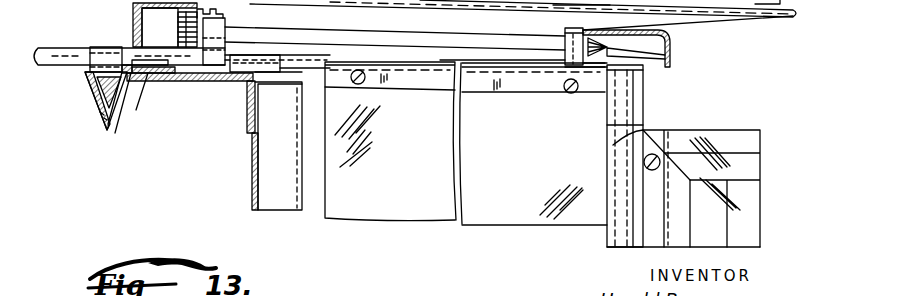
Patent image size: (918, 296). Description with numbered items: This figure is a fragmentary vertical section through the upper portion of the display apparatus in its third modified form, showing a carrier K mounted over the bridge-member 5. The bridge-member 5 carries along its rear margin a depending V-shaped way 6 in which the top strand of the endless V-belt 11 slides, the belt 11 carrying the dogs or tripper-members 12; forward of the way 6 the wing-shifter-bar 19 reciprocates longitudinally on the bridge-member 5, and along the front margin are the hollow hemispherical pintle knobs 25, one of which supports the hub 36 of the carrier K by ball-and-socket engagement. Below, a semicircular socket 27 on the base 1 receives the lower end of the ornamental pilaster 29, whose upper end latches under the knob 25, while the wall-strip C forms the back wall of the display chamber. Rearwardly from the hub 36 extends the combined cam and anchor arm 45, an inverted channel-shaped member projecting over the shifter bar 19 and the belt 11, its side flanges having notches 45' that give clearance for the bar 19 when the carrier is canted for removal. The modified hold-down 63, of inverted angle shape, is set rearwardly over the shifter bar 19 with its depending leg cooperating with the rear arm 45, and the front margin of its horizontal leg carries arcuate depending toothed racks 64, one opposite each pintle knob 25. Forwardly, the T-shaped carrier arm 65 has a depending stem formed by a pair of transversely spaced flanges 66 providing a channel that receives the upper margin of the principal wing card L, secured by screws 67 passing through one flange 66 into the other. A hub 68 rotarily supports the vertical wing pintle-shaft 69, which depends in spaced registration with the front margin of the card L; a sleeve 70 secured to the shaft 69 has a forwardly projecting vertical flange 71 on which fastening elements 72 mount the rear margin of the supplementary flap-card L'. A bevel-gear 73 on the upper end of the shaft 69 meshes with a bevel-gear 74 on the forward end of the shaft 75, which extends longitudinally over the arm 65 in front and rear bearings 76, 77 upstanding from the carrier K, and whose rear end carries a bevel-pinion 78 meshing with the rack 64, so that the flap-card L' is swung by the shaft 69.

The base 1 is at (396, 1).
The intermediate socket member 27 is at (473, 3).
The carrier K is at (320, 59).
The shaft 75 is at (497, 20).
The front bearing 76 is at (565, 60).
The combined cam and anchor arm 45 is at (129, 45).
The notches 45' is at (105, 146).
The tripper-member 12 is at (112, 38).
The hold-down 63 is at (133, 17).
The rack 64 is at (178, 22).
The bevel-pinion 78 is at (187, 44).
The rear bearing 77 is at (225, 20).
The endless V-belt 11 is at (97, 92).
The V-shaped way 6 is at (97, 117).
The wing-shifter-bar 19 is at (131, 103).
The bridge-member 5 is at (194, 78).
The pintle knob 25 is at (248, 81).
The hub-portion 36 is at (270, 45).
The pilaster 29 is at (291, 181).
The wall-strip C is at (256, 179).
The carrier arm 65 is at (451, 64).
The screws 67 is at (362, 84).
The principal wing card L is at (534, 144).
The longitudinal flanges 66 is at (487, 91).
The bevel-gear 74 is at (565, 30).
The bevel-gear 73 is at (670, 50).
The hub 68 is at (652, 80).
The sleeve 70 is at (607, 241).
The vertical flange 71 is at (648, 225).
The fastening elements 72 is at (668, 152).
The wing pintle-shaft 69 is at (647, 130).
The supplementary flap-card L' is at (744, 125).